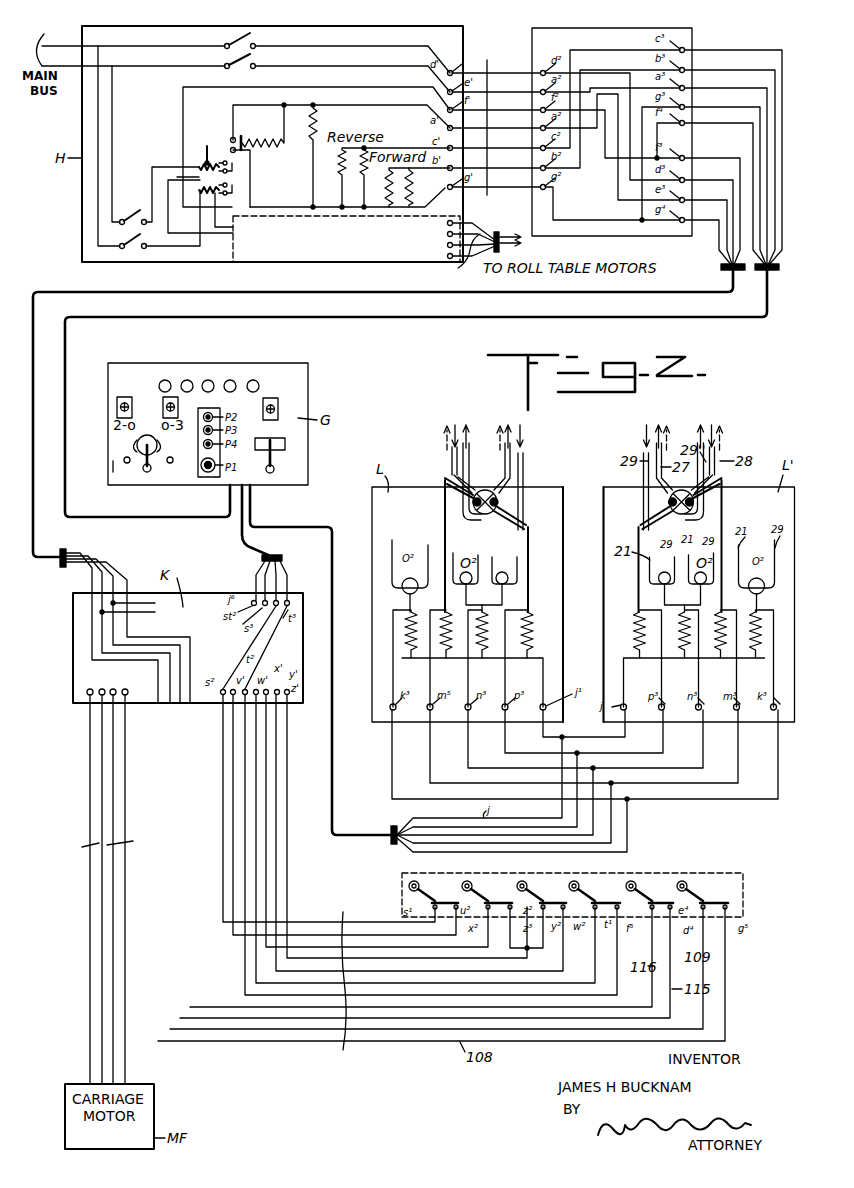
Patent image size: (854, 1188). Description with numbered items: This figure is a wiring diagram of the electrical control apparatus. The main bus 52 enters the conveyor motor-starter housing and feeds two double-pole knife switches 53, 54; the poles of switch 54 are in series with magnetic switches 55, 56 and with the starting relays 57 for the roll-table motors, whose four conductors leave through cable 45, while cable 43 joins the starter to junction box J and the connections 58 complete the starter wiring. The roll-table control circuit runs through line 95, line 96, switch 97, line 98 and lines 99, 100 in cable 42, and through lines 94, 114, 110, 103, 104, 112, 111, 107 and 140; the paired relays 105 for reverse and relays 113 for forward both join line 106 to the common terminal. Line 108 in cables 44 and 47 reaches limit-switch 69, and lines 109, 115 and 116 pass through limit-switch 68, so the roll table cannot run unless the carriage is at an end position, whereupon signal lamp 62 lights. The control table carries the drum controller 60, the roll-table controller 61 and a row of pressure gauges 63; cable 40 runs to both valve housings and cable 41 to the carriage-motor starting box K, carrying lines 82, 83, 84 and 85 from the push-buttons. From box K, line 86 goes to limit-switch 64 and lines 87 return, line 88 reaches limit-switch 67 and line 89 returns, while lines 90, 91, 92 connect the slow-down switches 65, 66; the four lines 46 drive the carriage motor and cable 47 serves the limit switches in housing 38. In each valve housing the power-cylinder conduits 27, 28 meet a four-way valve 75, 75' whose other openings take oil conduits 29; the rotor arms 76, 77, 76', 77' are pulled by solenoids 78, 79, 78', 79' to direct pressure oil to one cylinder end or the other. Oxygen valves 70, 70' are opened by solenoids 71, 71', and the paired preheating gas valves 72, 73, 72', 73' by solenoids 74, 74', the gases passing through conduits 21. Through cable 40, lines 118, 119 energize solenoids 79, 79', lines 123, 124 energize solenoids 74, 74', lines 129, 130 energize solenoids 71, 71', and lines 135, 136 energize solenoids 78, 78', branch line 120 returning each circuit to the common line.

The main bus 52 is at (130, 43).
The double-pole single-throw knife switch 53 is at (232, 34).
The double-pole single-throw knife switch 54 is at (130, 210).
The magnetic switch 55 is at (200, 165).
The magnetic switch 56 is at (207, 146).
The line 96 is at (183, 87).
The switch 97 is at (251, 150).
The line 98 is at (320, 104).
The pair of relays 105 is at (342, 160).
The pair of relays 113 is at (409, 187).
The line 106 is at (425, 200).
The starting relays 57 is at (325, 258).
The conductors 58 is at (460, 256).
The cable 45 is at (520, 244).
The cable 43 is at (487, 190).
The line 114 is at (496, 64).
The line 110 is at (496, 83).
The line 95 is at (496, 101).
The line 99 is at (496, 119).
The line 104 is at (496, 139).
The line 112 is at (496, 159).
The line 107 is at (496, 178).
The line 103 is at (770, 50).
The line 111 is at (730, 158).
The line 100 is at (726, 168).
The line 140 is at (726, 177).
The line 94 is at (726, 186).
The line 116 is at (711, 160).
The line 115 is at (711, 182).
The line 109 is at (728, 209).
The line 108 is at (719, 233).
The cable 44 is at (731, 278).
The cable 42 is at (769, 284).
The fluid-pressure gauges 63 is at (254, 380).
The signal lamp 62 is at (280, 402).
The roll-table controller 61 is at (287, 447).
The drum controller 60 is at (130, 450).
The cable 40 is at (287, 524).
The cable 41 is at (247, 543).
The line 83 is at (262, 575).
The line 84 is at (287, 572).
The line 82 is at (263, 588).
The line 85 is at (290, 590).
The cable 46 is at (85, 852).
The line 86 is at (223, 760).
The lines 87 is at (233, 785).
The line 88 is at (245, 810).
The line 89 is at (256, 840).
The line 91 is at (266, 800).
The line 92 is at (276, 825).
The line 90 is at (287, 857).
The cable 47 is at (346, 1040).
The conduit 28 is at (451, 461).
The oil inlet conduit 29 is at (469, 462).
The conduit 27 is at (471, 470).
The operating arm 77 is at (448, 545).
The four-way valve 75 is at (514, 502).
The operating arm 76 is at (527, 559).
The conduit 21 is at (428, 548).
The oxygen-control valve 70 is at (397, 595).
The solenoid 71 is at (396, 658).
The preheating gas-control valve 72 is at (465, 582).
The preheating gas-control valve 73 is at (504, 582).
The solenoid 74 is at (486, 658).
The solenoid 78 is at (533, 658).
The solenoid 79 is at (448, 658).
The four-way valve 75' is at (656, 502).
The operating arm 76' is at (642, 559).
The operating arm 77' is at (726, 541).
The oxygen-control valve 70' is at (770, 595).
The solenoid 71' is at (767, 658).
The preheating gas-control valve 72' is at (702, 582).
The preheating gas-control valve 73' is at (665, 582).
The solenoid 74' is at (687, 658).
The solenoid 78' is at (635, 658).
The solenoid 79' is at (728, 658).
The branch line 120 is at (584, 724).
The line 136 is at (625, 753).
The branch line 124 is at (670, 768).
The branch line 119 is at (710, 783).
The branch line 130 is at (750, 799).
The line 135 is at (510, 818).
The line 123 is at (632, 810).
The line 129 is at (632, 827).
The line 118 is at (625, 845).
The limit-switch 64 is at (442, 900).
The limit-switch 65 is at (498, 900).
The limit-switch 66 is at (553, 900).
The limit-switch 67 is at (605, 900).
The limit-switch 68 is at (660, 900).
The limit-switch 69 is at (715, 900).
The housing 38 is at (745, 885).